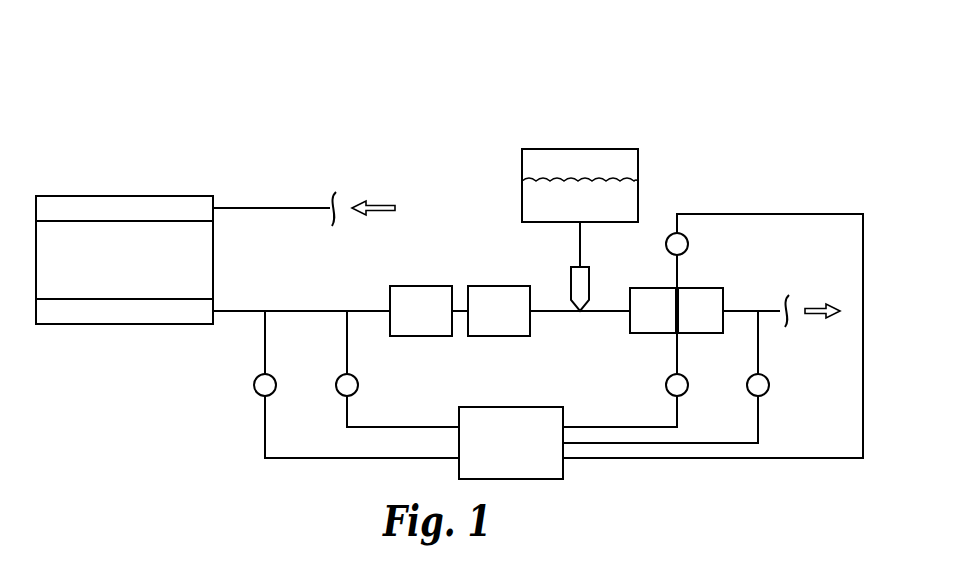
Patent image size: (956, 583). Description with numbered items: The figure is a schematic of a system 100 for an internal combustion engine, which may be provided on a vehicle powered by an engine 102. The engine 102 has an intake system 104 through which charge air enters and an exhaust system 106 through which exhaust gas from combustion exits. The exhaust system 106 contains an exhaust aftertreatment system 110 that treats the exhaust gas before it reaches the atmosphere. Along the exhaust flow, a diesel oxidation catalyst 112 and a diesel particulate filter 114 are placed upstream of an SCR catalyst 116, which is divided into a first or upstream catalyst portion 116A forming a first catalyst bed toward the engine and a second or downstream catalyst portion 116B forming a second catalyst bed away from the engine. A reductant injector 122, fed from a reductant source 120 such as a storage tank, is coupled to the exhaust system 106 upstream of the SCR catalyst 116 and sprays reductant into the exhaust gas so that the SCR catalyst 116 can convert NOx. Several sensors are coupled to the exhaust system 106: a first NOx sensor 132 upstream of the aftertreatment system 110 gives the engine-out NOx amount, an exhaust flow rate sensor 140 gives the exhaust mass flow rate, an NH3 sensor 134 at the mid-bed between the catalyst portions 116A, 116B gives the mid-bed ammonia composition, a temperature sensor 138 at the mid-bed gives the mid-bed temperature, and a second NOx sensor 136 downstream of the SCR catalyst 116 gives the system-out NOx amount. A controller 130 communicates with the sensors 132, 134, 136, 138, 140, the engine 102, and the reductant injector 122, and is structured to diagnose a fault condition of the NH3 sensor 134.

The system 100 is at (737, 53).
The engine 102 is at (109, 273).
The intake system 104 is at (265, 206).
The exhaust system 106 is at (240, 309).
The exhaust aftertreatment system 110 is at (488, 261).
The diesel oxidation catalyst 112 is at (405, 323).
The diesel particulate filter 114 is at (483, 323).
The SCR catalyst 116 is at (680, 337).
The first catalyst portion 116A is at (643, 286).
The second catalyst portion 116B is at (703, 286).
The reductant source 120 is at (578, 147).
The reductant injector 122 is at (572, 264).
The controller 130 is at (495, 453).
The first NOx sensor 132 is at (254, 378).
The NH3 sensor 134 is at (689, 243).
The second NOx sensor 136 is at (767, 393).
The temperature sensor 138 is at (665, 378).
The exhaust flow rate sensor 140 is at (338, 393).